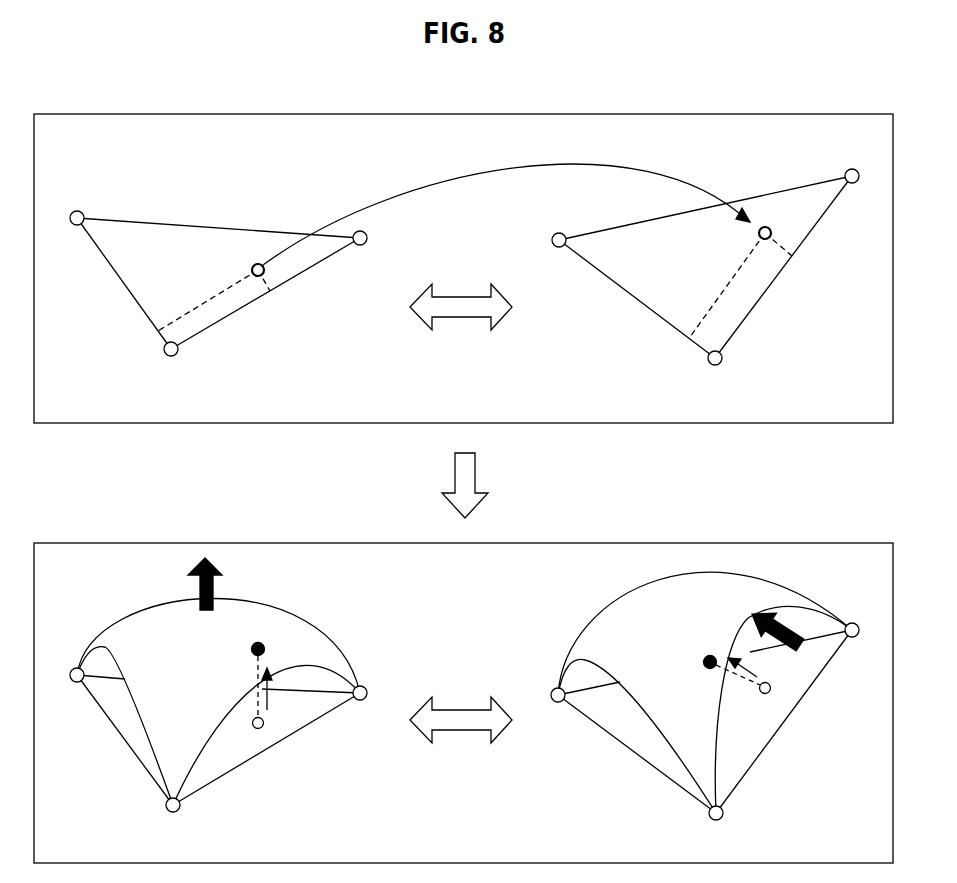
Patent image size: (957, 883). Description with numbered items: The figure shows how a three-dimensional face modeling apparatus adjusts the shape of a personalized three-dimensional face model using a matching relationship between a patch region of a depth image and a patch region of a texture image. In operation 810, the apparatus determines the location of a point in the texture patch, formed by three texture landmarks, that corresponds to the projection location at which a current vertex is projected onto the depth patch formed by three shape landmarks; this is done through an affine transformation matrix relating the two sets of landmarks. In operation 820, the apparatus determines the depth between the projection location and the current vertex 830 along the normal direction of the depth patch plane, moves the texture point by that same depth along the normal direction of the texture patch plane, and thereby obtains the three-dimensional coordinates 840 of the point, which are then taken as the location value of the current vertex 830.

The operation 810 is at (733, 114).
The operation 820 is at (733, 543).
The current vertex 830 is at (250, 646).
The 3D coordinates 840 is at (704, 657).